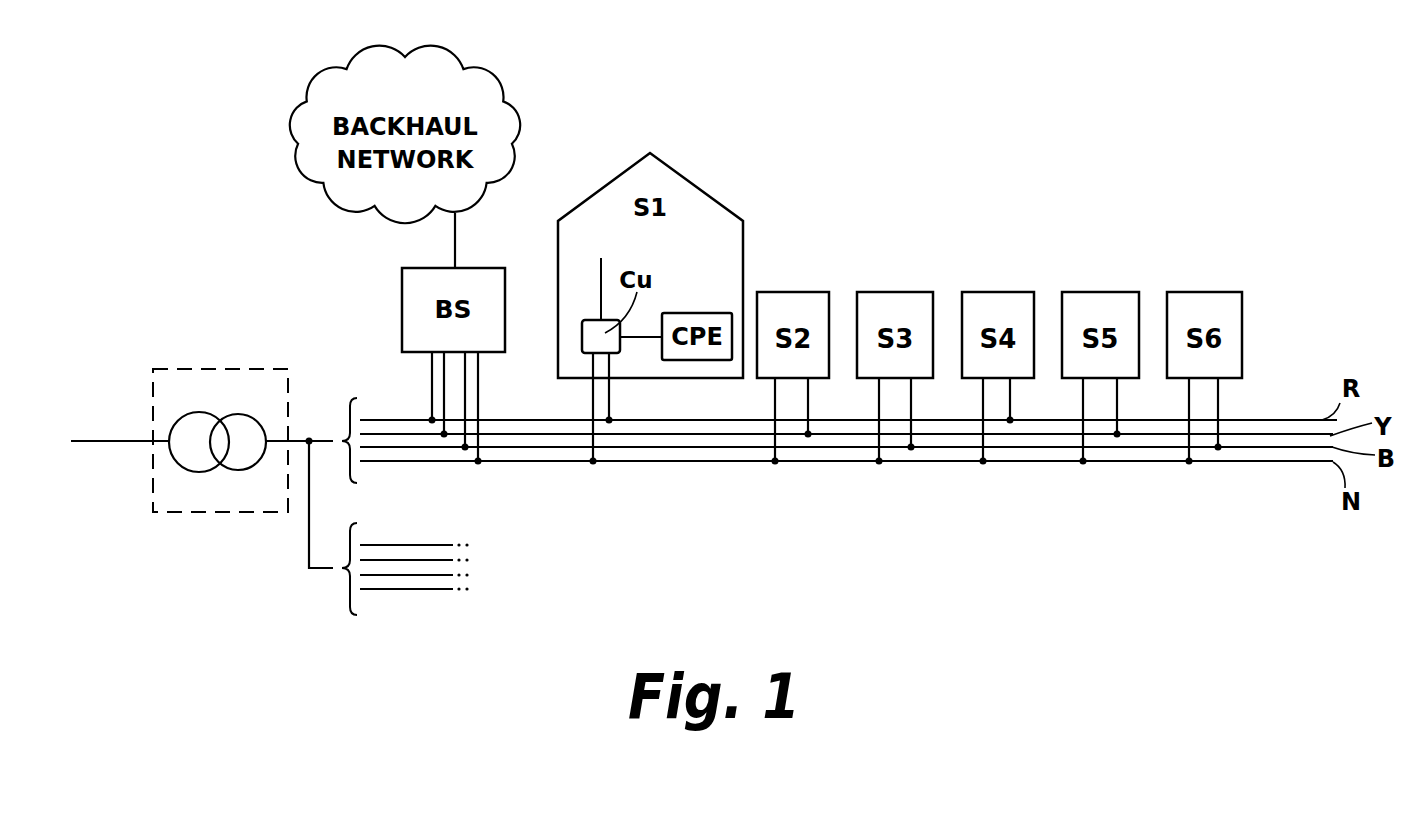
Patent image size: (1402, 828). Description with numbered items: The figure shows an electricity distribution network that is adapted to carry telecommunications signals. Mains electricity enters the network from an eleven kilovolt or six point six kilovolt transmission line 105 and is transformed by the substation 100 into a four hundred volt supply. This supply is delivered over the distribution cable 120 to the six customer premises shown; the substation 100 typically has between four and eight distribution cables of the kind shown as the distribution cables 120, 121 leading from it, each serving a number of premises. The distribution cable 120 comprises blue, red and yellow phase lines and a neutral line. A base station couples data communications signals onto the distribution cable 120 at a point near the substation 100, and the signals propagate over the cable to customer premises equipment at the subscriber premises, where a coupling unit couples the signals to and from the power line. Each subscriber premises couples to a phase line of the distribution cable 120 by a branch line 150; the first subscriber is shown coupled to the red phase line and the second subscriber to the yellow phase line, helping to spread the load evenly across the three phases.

The substation 100 is at (157, 408).
The transmission line 105 is at (103, 442).
The distribution cable 120 is at (341, 428).
The distribution cable 121 is at (347, 595).
The branch line 150 is at (587, 404).